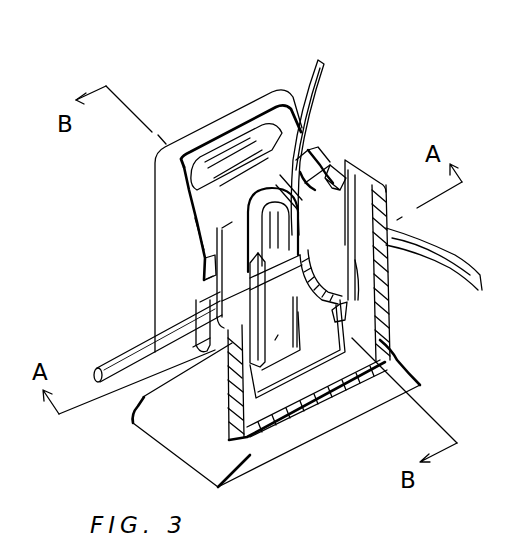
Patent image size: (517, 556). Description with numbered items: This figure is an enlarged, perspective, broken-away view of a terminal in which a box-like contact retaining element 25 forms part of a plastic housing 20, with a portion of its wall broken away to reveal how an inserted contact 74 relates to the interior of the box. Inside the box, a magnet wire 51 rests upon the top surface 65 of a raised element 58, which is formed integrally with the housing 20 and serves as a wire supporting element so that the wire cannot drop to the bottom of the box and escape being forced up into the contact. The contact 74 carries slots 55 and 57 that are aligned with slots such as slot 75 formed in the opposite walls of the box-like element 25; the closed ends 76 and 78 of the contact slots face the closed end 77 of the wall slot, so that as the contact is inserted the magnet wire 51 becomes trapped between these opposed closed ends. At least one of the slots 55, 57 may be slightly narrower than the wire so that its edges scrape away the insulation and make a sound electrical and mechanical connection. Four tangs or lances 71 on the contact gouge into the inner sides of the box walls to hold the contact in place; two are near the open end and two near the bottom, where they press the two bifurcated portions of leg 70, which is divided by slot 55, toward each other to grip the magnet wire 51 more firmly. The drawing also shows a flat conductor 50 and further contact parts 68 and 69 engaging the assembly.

The plastic housing 20 is at (325, 427).
The box-like contact retaining element 25 is at (163, 200).
The flat conductor wire 50 is at (302, 88).
The magnet wire 51 is at (119, 360).
The slot 55 is at (213, 292).
The slot 57 is at (286, 252).
The raised element 58 is at (275, 340).
The top surface 65 is at (273, 293).
The contact strip 68 is at (317, 167).
The sleeve 69 is at (323, 160).
The leg 70 is at (215, 255).
The tangs or lances 71 is at (248, 256).
The contact 74 is at (220, 162).
The slot 75 is at (200, 305).
The closed end 76 is at (208, 266).
The closed end 77 is at (193, 347).
The closed end 78 is at (357, 235).